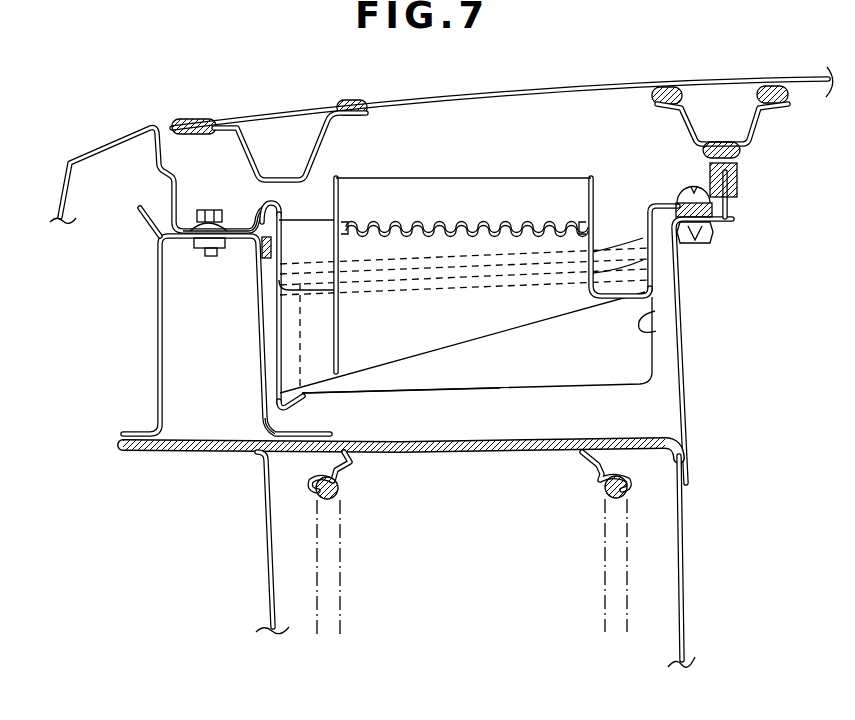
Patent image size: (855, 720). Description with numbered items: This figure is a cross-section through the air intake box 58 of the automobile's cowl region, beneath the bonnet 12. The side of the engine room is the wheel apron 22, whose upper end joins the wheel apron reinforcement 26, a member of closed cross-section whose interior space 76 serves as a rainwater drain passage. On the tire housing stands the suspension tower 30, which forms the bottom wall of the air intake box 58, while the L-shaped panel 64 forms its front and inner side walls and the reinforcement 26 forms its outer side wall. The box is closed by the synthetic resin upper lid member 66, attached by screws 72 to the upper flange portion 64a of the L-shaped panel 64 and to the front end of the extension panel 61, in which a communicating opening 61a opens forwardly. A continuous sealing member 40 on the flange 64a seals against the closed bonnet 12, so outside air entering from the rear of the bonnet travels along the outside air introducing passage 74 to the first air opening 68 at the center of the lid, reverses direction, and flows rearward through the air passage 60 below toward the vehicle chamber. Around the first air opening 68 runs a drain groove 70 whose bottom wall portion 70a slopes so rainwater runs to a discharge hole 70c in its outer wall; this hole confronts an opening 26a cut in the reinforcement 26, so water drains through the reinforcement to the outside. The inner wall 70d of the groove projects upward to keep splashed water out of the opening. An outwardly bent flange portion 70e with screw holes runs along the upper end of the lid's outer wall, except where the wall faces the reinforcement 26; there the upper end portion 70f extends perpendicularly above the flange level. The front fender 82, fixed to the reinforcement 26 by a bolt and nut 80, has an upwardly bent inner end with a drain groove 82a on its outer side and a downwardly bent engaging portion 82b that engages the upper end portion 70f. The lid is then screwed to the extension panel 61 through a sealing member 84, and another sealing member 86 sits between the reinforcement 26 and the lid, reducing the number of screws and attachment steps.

The bonnet 12 is at (533, 86).
The wheel apron 22 is at (267, 583).
The wheel apron reinforcement 26 is at (158, 351).
The opening 26a is at (263, 398).
The suspension tower 30 is at (682, 564).
The sealing member 40 is at (742, 150).
The air intake box 58 is at (708, 273).
The air passage 60 is at (531, 371).
The extension panel 61 is at (640, 403).
The communicating opening 61a is at (655, 312).
The L-shaped panel 64 is at (683, 342).
The upper flange portion 64a is at (730, 201).
The upper lid member 66 is at (592, 176).
The first air opening 68 is at (472, 208).
The drain groove 70 is at (281, 328).
The bottom wall portion 70a is at (318, 374).
The discharge hole 70c is at (277, 392).
The inner wall 70d is at (334, 242).
The flange portion 70e is at (660, 203).
The upper end portion 70f is at (263, 208).
The screw 72 is at (686, 195).
The outside air introducing passage 74 is at (453, 152).
The interior space 76 is at (229, 348).
The bolt and nut 80 is at (207, 211).
The front fender 82 is at (112, 146).
The drain groove 82a is at (236, 218).
The engaging portion 82b is at (290, 215).
The sealing member 84 is at (730, 211).
The sealing member 86 is at (257, 250).